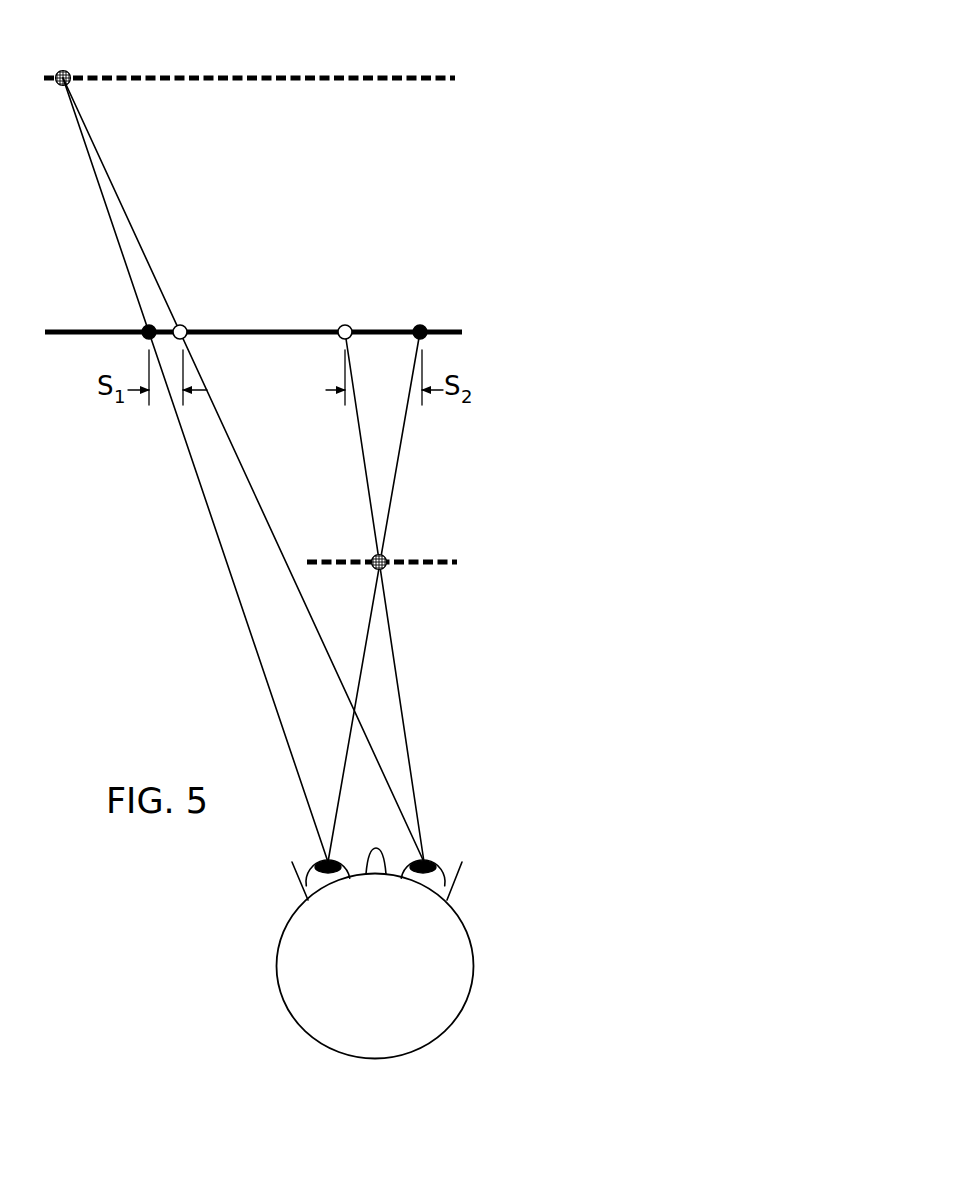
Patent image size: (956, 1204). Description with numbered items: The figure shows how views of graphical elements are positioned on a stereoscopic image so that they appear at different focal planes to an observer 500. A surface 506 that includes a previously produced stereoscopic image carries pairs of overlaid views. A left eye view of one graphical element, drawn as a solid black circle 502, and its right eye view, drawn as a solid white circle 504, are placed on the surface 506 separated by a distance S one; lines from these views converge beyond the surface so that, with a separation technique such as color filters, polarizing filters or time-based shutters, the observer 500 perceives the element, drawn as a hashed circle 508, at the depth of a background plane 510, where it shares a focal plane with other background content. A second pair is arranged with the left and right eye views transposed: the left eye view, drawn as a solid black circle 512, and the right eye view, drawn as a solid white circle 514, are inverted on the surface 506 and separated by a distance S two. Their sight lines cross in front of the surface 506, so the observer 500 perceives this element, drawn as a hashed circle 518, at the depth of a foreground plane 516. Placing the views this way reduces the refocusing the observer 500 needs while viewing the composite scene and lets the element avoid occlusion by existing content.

The observer 500 is at (403, 975).
The solid black circle 502 is at (144, 325).
The solid white circle 504 is at (187, 322).
The surface 506 is at (462, 332).
The hashed circle 508 is at (68, 72).
The background plane 510 is at (455, 78).
The solid black circle 512 is at (415, 326).
The solid white circle 514 is at (340, 325).
The foreground plane 516 is at (457, 562).
The hashed circle 518 is at (372, 556).